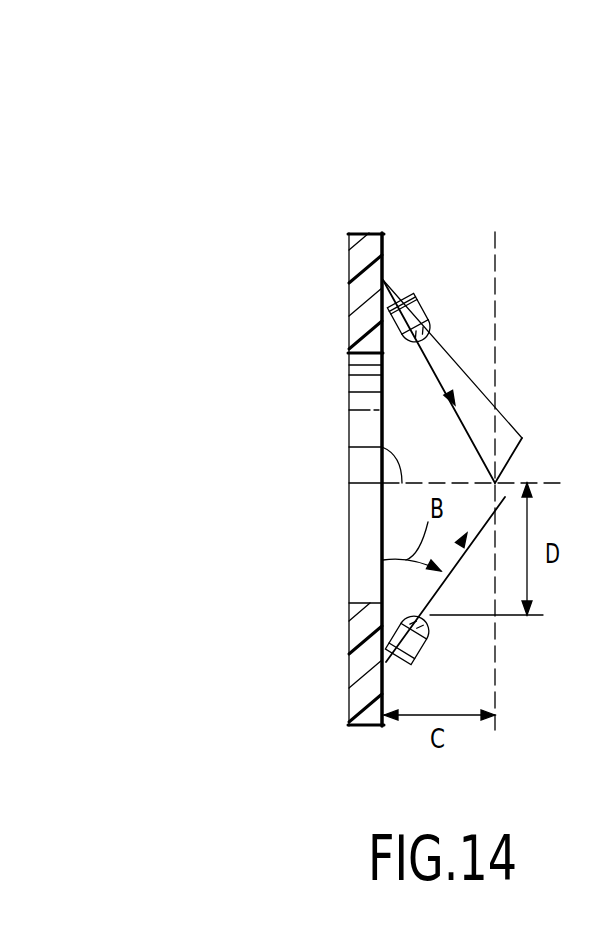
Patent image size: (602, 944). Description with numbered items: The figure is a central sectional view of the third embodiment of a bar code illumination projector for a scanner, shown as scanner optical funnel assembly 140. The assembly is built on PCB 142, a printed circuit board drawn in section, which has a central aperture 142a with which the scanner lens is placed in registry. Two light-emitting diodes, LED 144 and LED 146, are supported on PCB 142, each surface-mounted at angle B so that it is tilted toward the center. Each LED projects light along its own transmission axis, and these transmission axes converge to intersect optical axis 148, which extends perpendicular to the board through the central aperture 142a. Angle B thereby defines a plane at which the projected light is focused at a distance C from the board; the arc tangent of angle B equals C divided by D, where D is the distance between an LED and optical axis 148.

The scanner optical funnel assembly 140 is at (450, 172).
The PCB 142 is at (350, 267).
The central aperture 142a is at (360, 399).
The LED 144 is at (418, 318).
The LED 146 is at (405, 612).
The optical axis 148 is at (349, 447).